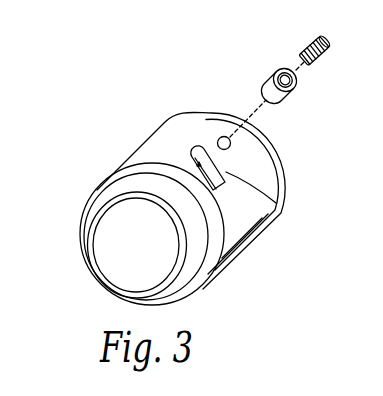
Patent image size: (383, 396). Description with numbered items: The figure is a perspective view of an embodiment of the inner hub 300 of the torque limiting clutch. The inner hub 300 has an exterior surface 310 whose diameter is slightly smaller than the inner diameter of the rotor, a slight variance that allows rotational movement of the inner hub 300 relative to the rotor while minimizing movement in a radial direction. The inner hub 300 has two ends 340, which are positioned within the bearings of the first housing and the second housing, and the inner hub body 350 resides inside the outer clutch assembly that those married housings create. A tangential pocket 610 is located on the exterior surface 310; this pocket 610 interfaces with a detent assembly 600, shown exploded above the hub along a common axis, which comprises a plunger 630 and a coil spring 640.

The inner hub 300 is at (196, 157).
The exterior surface 310 is at (172, 135).
The ends 340 is at (135, 187).
The inner hub body 350 is at (237, 229).
The tangential pocket 610 is at (279, 219).
The detent assembly 600 is at (287, 80).
The plunger 630 is at (268, 84).
The coil spring 640 is at (302, 49).